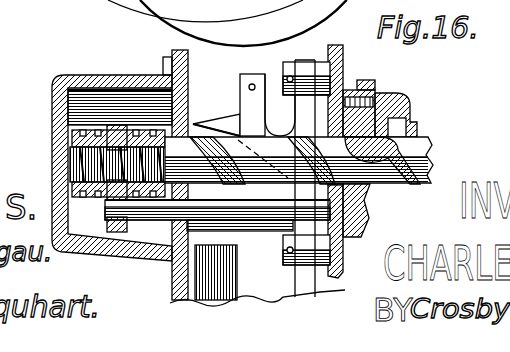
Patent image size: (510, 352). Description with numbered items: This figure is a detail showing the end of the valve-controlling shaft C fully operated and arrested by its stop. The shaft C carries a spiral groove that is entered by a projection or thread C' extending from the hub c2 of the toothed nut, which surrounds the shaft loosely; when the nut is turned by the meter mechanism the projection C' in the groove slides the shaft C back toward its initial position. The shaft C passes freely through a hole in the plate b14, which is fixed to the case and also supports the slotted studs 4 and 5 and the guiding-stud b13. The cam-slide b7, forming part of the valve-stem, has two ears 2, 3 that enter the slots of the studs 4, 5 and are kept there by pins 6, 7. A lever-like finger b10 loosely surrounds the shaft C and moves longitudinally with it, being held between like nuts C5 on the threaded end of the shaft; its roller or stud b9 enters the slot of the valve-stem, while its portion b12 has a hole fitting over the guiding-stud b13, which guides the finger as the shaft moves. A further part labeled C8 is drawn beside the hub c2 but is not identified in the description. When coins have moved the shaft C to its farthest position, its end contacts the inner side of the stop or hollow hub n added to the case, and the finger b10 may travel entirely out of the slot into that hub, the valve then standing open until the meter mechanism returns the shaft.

The stop or projection n is at (52, 109).
The finger b10 is at (116, 128).
The roller or stud b9 is at (121, 130).
The cam-slide b7 is at (227, 121).
The pin 6 is at (289, 76).
The ear 2 is at (306, 62).
The slotted stud 4 is at (326, 62).
The nut C8 is at (350, 92).
The projection or thread C' is at (396, 96).
The valve-controlling shaft C is at (311, 160).
The nuts C5 is at (70, 193).
The portion of lever b12 is at (116, 232).
The guiding-stud b13 is at (160, 221).
The pin 7 is at (287, 252).
The slotted stud 5 is at (288, 266).
The ear 3 is at (307, 296).
The hub c2 is at (352, 240).
The plate b14 is at (340, 254).